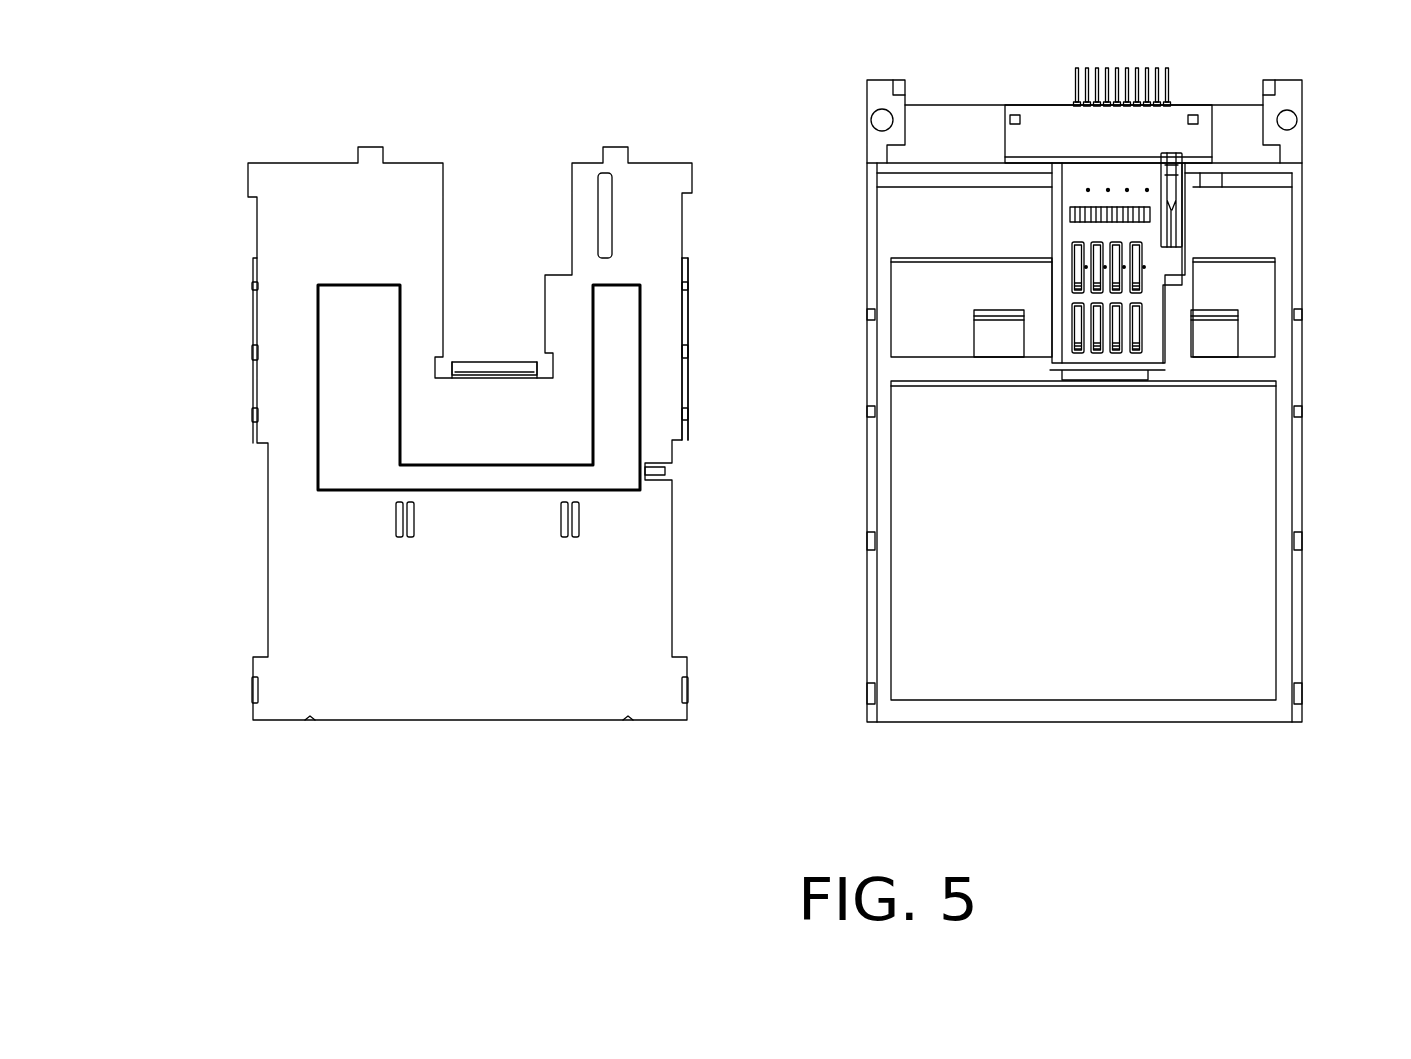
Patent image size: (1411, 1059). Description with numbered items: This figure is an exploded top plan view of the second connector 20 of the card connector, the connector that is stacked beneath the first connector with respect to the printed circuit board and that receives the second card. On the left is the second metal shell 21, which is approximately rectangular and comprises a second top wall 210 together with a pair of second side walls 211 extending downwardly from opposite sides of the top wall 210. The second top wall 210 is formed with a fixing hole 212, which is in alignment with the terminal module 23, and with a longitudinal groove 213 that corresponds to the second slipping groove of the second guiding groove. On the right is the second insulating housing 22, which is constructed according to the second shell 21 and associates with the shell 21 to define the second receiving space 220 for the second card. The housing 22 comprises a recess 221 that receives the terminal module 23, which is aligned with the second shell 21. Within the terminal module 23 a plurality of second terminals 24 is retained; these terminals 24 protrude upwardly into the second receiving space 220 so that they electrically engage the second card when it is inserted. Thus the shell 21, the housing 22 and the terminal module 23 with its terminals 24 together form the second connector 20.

The second connector 20 is at (1295, 68).
The second metal shell 21 is at (295, 575).
The second insulating housing 22 is at (1260, 373).
The terminal module 23 is at (1083, 179).
The second terminals 24 is at (1080, 268).
The second top wall 210 is at (478, 680).
The second side walls 211 is at (688, 383).
The fixing hole 212 is at (498, 273).
The longitudinal groove 213 is at (607, 204).
The second receiving space 220 is at (1122, 670).
The recess 221 is at (1193, 235).